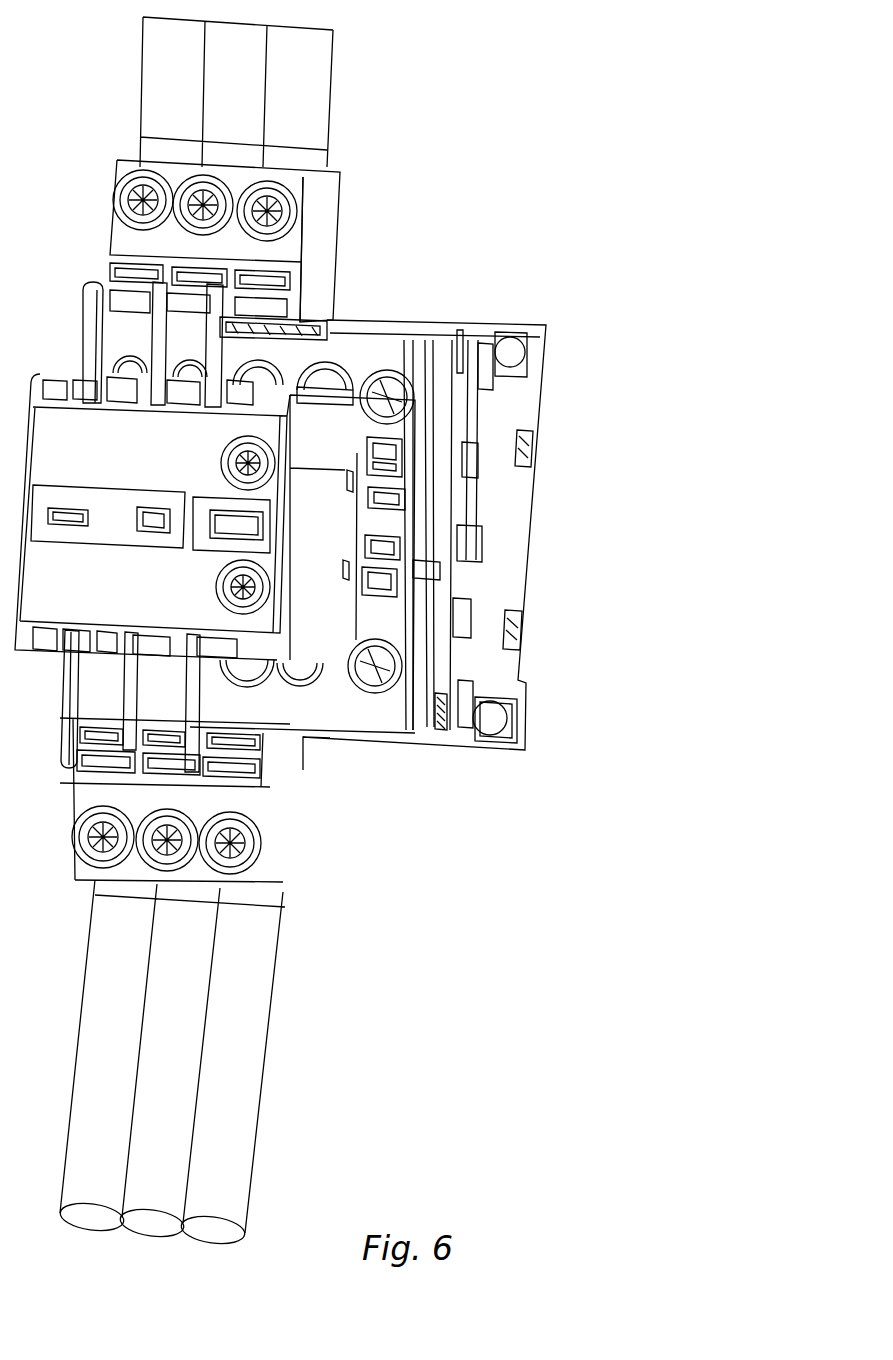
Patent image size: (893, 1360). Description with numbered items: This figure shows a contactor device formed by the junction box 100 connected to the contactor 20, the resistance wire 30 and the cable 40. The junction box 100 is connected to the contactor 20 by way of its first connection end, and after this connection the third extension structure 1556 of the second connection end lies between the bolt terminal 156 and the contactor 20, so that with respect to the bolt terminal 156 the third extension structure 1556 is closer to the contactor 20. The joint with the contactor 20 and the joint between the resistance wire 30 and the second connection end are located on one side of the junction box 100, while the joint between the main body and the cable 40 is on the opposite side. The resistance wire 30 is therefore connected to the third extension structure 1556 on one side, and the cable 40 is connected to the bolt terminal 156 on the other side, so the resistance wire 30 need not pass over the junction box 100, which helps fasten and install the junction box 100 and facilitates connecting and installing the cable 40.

The cable 40 is at (300, 94).
The junction box 100 is at (310, 225).
The contactor 20 is at (497, 487).
The resistance wire 30 is at (197, 703).
The bolt terminal 156 is at (265, 877).
The third extension structure 1556 is at (262, 730).